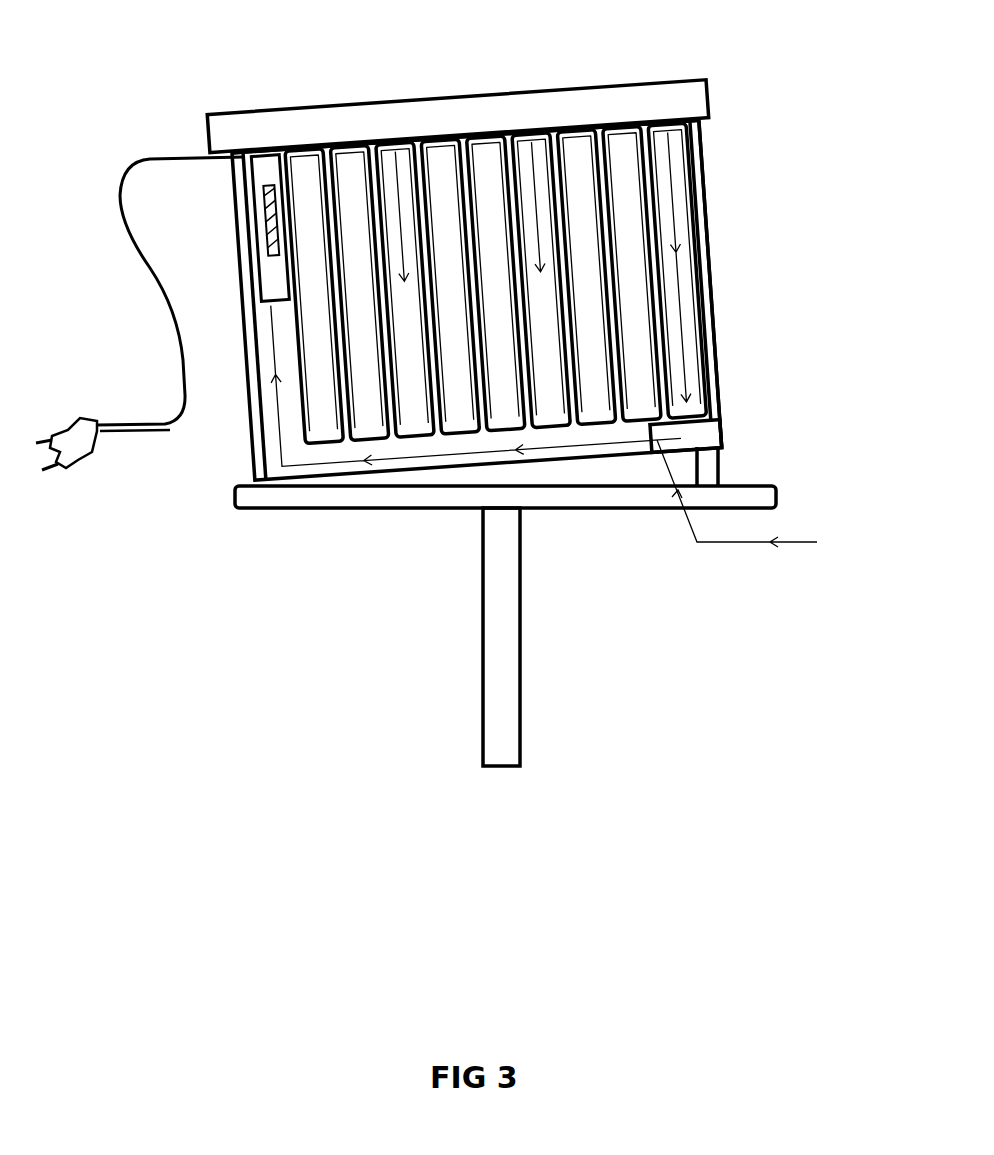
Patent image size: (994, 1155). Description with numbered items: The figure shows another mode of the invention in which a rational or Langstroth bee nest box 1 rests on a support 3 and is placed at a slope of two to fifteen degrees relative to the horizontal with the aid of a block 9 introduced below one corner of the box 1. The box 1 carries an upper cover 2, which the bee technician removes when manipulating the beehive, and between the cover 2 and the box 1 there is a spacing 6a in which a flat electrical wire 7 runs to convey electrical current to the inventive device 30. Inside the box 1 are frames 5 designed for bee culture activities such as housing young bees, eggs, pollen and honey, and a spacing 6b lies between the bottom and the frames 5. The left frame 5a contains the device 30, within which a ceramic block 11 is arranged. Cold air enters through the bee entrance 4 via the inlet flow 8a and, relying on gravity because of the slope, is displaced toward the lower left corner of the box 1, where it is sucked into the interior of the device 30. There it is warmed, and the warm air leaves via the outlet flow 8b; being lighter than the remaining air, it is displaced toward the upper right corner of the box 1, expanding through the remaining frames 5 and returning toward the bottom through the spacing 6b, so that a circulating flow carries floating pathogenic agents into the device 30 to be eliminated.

The box 1 is at (707, 269).
The upper cover 2 is at (661, 75).
The support 3 is at (482, 622).
The bee entrance 4 is at (700, 433).
The frames 5 is at (557, 120).
The frame containing device 5a is at (258, 308).
The spacing between cover and box 6a is at (703, 118).
The spacing between bottom and frames 6b is at (728, 410).
The flat electrical wire 7 is at (163, 153).
The cold air inlet flow 8a is at (744, 548).
The warm air outlet flow 8b is at (677, 185).
The block 9 is at (720, 470).
The ceramic block 11 is at (258, 240).
The device 30 is at (250, 173).